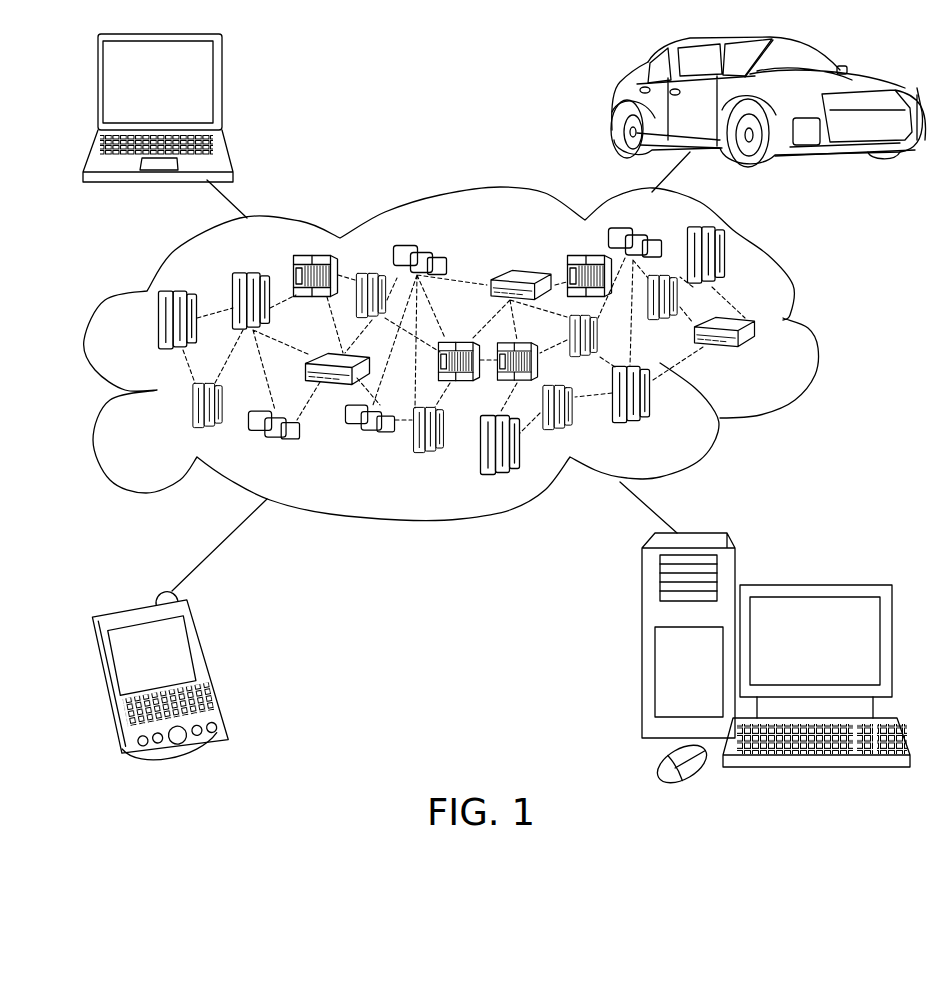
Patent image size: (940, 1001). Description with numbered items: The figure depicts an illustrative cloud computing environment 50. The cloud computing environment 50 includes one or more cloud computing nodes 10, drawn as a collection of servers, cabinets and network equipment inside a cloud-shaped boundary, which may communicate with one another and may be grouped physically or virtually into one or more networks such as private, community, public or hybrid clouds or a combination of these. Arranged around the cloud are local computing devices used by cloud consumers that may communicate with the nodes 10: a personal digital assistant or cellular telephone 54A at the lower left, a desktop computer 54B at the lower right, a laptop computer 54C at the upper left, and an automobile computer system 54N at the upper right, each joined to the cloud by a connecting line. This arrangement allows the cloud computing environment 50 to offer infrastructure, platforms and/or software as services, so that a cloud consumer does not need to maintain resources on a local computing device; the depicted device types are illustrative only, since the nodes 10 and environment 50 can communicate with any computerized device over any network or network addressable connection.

The cloud computing node 10 is at (766, 359).
The cloud computing environment 50 is at (816, 328).
The personal digital assistant or cellular telephone 54A is at (212, 670).
The desktop computer 54B is at (812, 586).
The laptop computer 54C is at (222, 88).
The automobile computer system 54N is at (617, 107).